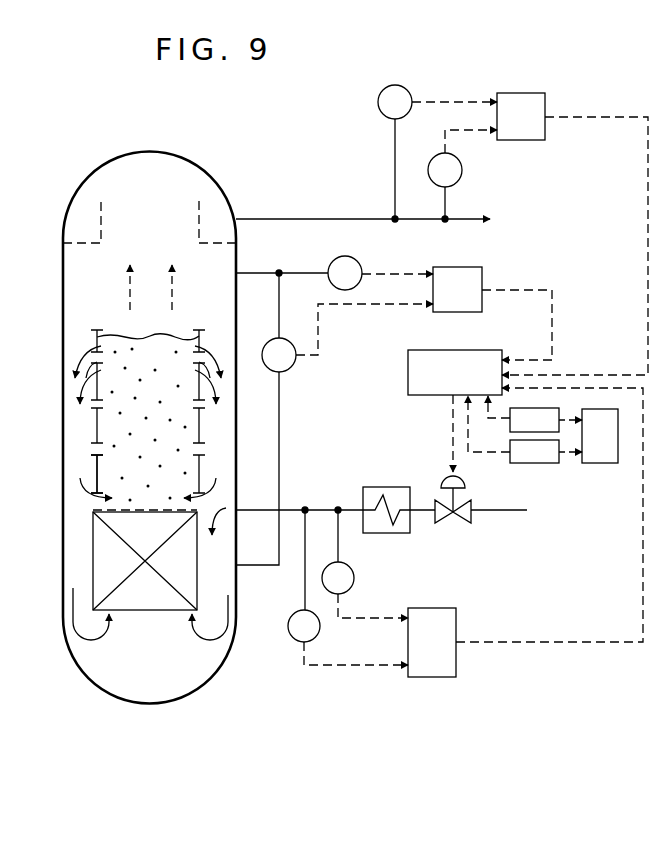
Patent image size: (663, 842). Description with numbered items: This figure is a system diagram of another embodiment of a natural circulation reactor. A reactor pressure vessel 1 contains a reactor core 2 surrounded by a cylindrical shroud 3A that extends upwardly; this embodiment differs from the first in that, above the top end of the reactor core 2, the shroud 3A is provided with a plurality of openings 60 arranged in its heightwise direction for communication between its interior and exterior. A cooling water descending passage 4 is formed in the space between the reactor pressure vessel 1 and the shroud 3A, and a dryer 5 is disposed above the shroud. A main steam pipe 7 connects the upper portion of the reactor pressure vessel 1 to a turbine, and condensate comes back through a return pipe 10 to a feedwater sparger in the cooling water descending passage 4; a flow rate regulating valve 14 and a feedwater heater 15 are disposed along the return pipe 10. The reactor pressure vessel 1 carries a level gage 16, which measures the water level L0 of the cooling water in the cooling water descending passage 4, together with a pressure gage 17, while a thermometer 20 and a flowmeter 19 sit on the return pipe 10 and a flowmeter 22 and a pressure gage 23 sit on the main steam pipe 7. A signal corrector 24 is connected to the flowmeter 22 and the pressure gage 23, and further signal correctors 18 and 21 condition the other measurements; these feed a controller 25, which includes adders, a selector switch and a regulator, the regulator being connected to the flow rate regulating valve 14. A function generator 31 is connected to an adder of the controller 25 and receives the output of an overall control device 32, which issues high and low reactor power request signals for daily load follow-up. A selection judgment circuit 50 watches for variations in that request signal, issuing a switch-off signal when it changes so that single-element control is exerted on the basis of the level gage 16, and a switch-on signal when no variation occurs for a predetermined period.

The reactor pressure vessel 1 is at (103, 168).
The reactor core 2 is at (150, 600).
The shroud 3A is at (92, 470).
The cooling water descending passage 4 is at (64, 540).
The dryer 5 is at (199, 208).
The main steam pipe 7 is at (300, 219).
The return pipe 10 is at (286, 510).
The flow rate regulating valve 14 is at (458, 524).
The feedwater heater 15 is at (388, 487).
The level gage 16 is at (290, 368).
The pressure gage 17 is at (345, 256).
The signal corrector 18 is at (482, 272).
The flowmeter 19 is at (354, 578).
The thermometer 20 is at (288, 630).
The signal corrector 21 is at (430, 677).
The flowmeter 22 is at (462, 170).
The pressure gage 23 is at (378, 102).
The signal corrector 24 is at (516, 93).
The controller 25 is at (408, 360).
The function generator 31 is at (533, 463).
The overall control device 32 is at (600, 463).
The selection judgment circuit 50 is at (564, 420).
The openings 60 is at (92, 400).
The water level L0 is at (236, 365).